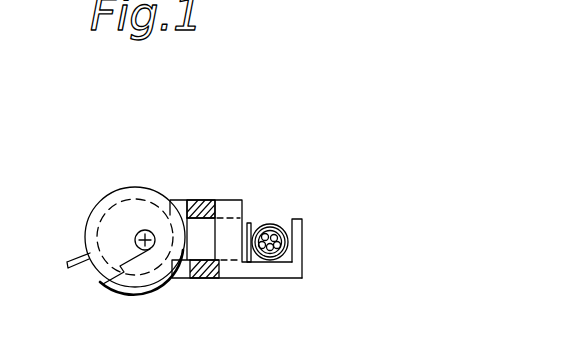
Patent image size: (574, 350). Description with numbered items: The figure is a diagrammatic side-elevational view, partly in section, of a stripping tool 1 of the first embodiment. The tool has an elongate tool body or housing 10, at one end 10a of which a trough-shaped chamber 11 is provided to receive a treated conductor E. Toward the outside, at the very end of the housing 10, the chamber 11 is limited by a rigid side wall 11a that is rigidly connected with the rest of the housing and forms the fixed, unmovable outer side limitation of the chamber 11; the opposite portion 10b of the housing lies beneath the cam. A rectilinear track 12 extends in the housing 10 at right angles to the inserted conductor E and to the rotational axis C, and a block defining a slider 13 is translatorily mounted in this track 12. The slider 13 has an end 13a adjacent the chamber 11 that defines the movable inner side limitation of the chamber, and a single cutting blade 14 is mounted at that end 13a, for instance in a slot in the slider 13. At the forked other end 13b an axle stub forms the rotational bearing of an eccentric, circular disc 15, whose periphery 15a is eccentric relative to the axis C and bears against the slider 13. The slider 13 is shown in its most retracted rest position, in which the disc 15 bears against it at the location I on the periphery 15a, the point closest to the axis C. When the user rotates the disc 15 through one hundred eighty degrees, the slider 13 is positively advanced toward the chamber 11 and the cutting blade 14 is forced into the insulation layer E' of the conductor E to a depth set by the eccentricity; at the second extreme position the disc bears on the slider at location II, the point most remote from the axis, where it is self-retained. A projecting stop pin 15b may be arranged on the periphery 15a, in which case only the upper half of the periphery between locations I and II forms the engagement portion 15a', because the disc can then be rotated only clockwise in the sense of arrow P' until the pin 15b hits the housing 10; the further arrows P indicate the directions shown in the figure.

The stripping tool 1 is at (303, 182).
The tool body or housing 10 is at (232, 278).
The end of the housing 10a is at (294, 278).
The housing lower lip 10b is at (112, 285).
The chamber 11 is at (288, 221).
The rigid side wall 11a is at (303, 228).
The rectilinear track 12 is at (203, 205).
The block or slider 13 is at (202, 278).
The end of the slider 13a is at (246, 222).
The other end of the slider 13b is at (175, 278).
The cutting blade 14 is at (252, 262).
The eccentric circular disc 15 is at (138, 245).
The periphery of the disc 15a is at (134, 305).
The engagement portion 15a' is at (79, 178).
The projecting stop pin 15b is at (67, 264).
The rotational axis C is at (115, 274).
The treated conductor E is at (290, 260).
The insulation layer E' is at (306, 255).
The first location on the periphery I is at (184, 238).
The second location on the periphery II is at (84, 235).
The pivot direction P is at (279, 230).
The arrow indicating clockwise rotation P' is at (105, 196).